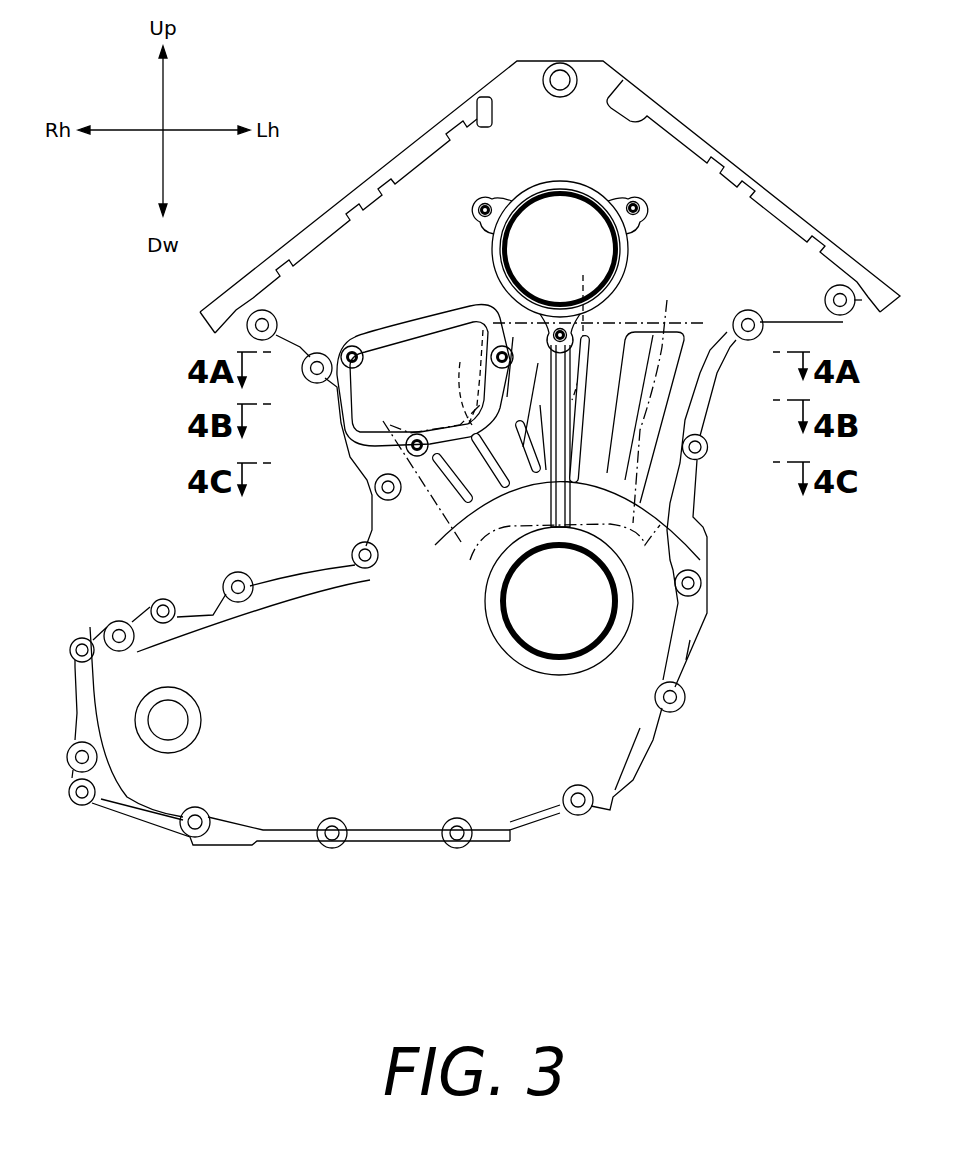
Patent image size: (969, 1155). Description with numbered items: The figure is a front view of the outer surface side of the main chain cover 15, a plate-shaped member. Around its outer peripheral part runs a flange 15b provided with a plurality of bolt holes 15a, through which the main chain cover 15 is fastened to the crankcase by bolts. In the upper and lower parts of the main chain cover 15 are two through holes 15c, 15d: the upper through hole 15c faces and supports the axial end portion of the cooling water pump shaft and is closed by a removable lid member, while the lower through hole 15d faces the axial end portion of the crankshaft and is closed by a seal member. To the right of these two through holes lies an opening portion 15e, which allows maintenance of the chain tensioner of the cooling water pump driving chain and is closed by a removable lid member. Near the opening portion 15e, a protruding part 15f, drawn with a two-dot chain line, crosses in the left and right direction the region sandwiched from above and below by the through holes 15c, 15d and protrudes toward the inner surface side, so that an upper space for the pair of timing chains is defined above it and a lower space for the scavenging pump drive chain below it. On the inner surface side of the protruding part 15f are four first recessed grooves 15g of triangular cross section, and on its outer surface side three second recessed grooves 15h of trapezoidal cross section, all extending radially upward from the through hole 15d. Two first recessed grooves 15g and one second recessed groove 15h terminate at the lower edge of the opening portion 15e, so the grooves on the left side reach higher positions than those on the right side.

The main chain cover 15 is at (685, 105).
The bolt holes 15a is at (562, 63).
The flange 15b is at (687, 642).
The through hole 15c is at (602, 212).
The through hole 15d is at (594, 560).
The opening portion 15e is at (414, 338).
The protruding part 15f is at (666, 320).
The first recessed grooves 15g is at (549, 404).
The second recessed grooves 15h is at (507, 340).